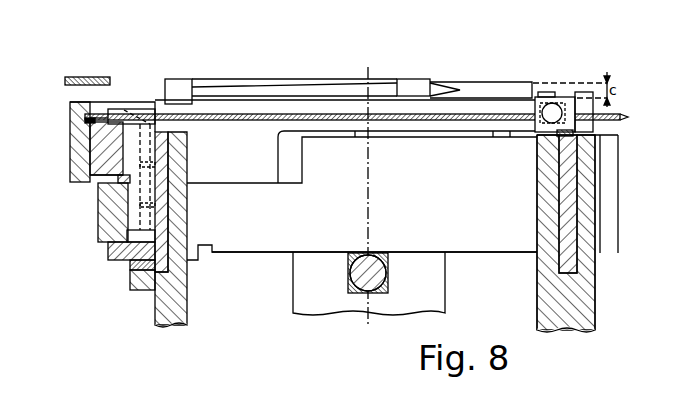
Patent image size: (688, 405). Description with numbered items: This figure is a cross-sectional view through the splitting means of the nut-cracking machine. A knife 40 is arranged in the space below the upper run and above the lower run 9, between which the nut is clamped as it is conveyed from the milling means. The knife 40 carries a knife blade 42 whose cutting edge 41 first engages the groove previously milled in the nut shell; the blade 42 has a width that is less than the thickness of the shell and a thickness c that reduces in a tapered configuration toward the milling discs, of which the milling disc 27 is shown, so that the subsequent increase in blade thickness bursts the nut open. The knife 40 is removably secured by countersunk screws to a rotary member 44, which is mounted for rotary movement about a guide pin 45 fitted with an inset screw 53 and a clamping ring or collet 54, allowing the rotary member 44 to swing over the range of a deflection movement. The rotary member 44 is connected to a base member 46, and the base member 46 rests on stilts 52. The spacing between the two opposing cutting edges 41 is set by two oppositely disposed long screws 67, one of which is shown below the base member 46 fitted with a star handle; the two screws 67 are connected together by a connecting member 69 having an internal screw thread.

The milling disc 27 is at (75, 66).
The inset screw 53 is at (143, 115).
The clamping ring or collet 54 is at (72, 108).
The guide pin 45 is at (115, 185).
The knife 40 is at (262, 81).
The knife blade 42 is at (388, 81).
The cutting edge 41 is at (414, 89).
The rotary member 44 is at (246, 156).
The base member 46 is at (364, 217).
The long screw 67 is at (390, 278).
The connecting member 69 is at (352, 296).
The stilt 52 is at (543, 304).
The lower run 9 is at (620, 126).